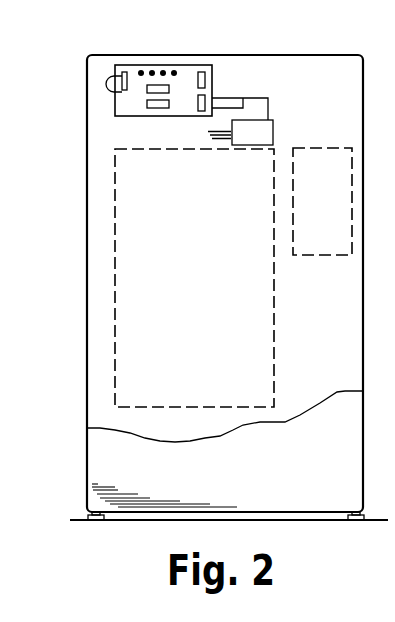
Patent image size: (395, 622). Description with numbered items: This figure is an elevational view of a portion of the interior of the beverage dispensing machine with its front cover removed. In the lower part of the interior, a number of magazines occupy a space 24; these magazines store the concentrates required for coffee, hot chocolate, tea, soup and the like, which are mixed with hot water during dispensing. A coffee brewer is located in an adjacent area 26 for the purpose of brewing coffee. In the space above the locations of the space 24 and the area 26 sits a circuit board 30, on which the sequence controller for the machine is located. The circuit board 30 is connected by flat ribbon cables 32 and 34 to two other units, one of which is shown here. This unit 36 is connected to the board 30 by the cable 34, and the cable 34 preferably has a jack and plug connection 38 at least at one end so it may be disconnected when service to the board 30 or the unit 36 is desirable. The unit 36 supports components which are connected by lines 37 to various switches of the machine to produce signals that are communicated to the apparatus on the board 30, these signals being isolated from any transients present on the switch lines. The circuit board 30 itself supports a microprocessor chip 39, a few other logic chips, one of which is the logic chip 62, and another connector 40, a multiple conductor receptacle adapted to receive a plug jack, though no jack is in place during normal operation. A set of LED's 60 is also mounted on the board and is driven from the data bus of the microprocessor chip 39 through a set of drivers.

The space for magazines 24 is at (113, 311).
The coffee brewer area 26 is at (322, 257).
The circuit board 30 is at (193, 66).
The flat ribbon cable 32 is at (110, 74).
The flat ribbon cable 34 is at (258, 106).
The unit 36 is at (270, 130).
The lines 37 is at (223, 141).
The jack and plug connection 38 is at (207, 93).
The microprocessor chip 39 is at (158, 108).
The connector 40 is at (206, 78).
The LED's 60 is at (165, 67).
The logic chip 62 is at (147, 88).